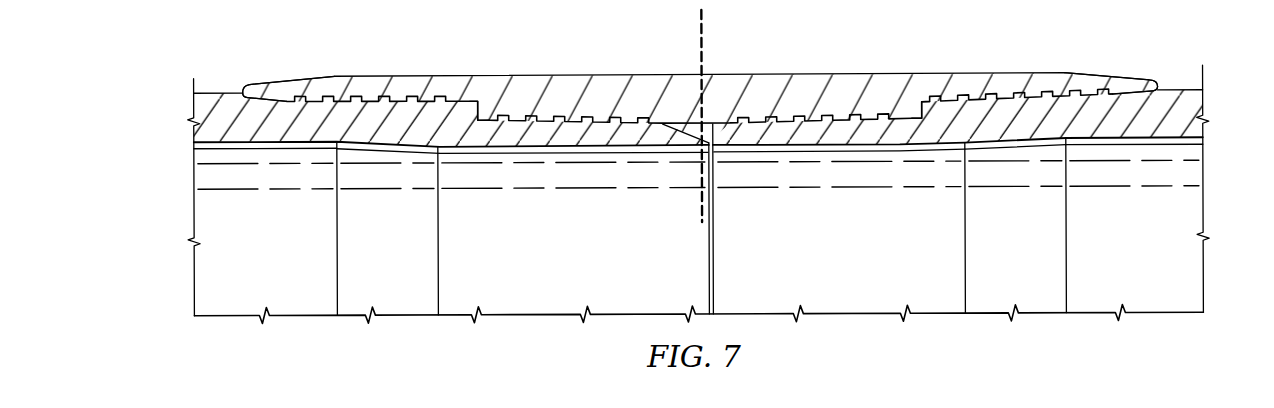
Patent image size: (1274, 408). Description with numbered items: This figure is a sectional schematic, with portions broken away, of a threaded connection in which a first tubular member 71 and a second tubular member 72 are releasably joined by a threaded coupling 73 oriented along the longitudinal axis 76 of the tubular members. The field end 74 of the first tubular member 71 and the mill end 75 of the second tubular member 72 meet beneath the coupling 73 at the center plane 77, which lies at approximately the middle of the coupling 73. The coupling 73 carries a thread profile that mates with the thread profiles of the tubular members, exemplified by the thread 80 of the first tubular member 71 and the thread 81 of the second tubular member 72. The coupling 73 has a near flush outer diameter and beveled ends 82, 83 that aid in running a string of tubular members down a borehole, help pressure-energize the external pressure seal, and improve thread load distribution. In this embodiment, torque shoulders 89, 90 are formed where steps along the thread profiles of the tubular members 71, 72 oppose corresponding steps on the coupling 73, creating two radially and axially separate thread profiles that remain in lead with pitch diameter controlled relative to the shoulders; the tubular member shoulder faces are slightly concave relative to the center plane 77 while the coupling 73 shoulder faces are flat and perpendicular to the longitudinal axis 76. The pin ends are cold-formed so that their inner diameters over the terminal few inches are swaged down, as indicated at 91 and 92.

The first tubular member 71 is at (192, 108).
The second tubular member 72 is at (1212, 109).
The threaded coupling 73 is at (603, 88).
The field end 74 is at (577, 138).
The mill end 75 is at (812, 138).
The longitudinal axis 76 is at (565, 255).
The center plane 77 is at (700, 30).
The thread 80 is at (657, 128).
The thread 81 is at (748, 128).
The beveled end 82 is at (290, 71).
The beveled end 83 is at (1108, 68).
The torque shoulder 89 is at (487, 106).
The torque shoulder 90 is at (913, 108).
The swaged inner diameter 91 is at (383, 150).
The swaged inner diameter 92 is at (1016, 150).